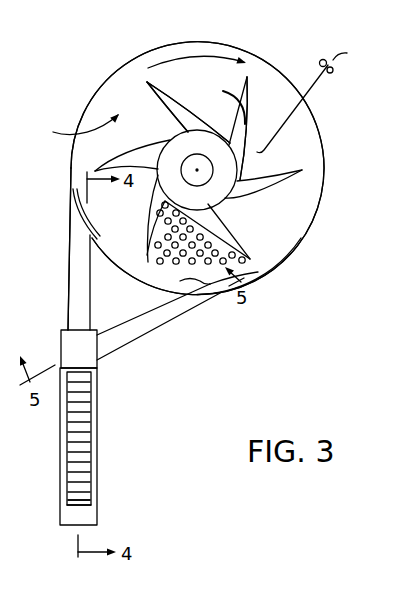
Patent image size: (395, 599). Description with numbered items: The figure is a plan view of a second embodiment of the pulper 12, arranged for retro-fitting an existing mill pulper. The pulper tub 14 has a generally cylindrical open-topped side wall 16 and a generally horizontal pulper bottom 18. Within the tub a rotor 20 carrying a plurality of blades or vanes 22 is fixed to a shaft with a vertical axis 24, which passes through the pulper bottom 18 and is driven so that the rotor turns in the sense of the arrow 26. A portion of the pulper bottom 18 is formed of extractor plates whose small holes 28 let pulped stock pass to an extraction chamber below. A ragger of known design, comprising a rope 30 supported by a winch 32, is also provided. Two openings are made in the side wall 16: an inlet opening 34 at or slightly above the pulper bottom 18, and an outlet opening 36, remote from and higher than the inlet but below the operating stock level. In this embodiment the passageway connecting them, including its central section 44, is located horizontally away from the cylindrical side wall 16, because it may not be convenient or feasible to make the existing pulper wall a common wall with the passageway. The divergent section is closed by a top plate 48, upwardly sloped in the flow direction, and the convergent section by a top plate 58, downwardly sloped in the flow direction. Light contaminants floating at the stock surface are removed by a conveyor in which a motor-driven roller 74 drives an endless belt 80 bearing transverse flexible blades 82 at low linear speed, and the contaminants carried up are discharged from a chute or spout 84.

The pulper 12 is at (307, 58).
The pulper tub 14 is at (74, 128).
The side wall 16 is at (110, 78).
The pulper bottom 18 is at (298, 231).
The rotor 20 is at (211, 198).
The blades or vanes 22 is at (185, 104).
The shaft with a vertical axis 24 is at (208, 165).
The arrow 26 is at (188, 57).
The holes 28 is at (160, 228).
The rope 30 is at (318, 88).
The winch 32 is at (333, 70).
The inlet opening 34 is at (206, 280).
The outlet opening 36 is at (88, 214).
The central section 44 is at (67, 352).
The top plate 48 is at (150, 327).
The top plate 58 is at (75, 273).
The roller 74 is at (90, 497).
The endless belt 80 is at (82, 447).
The transverse flexible blades 82 is at (77, 430).
The chute or spout 84 is at (72, 527).